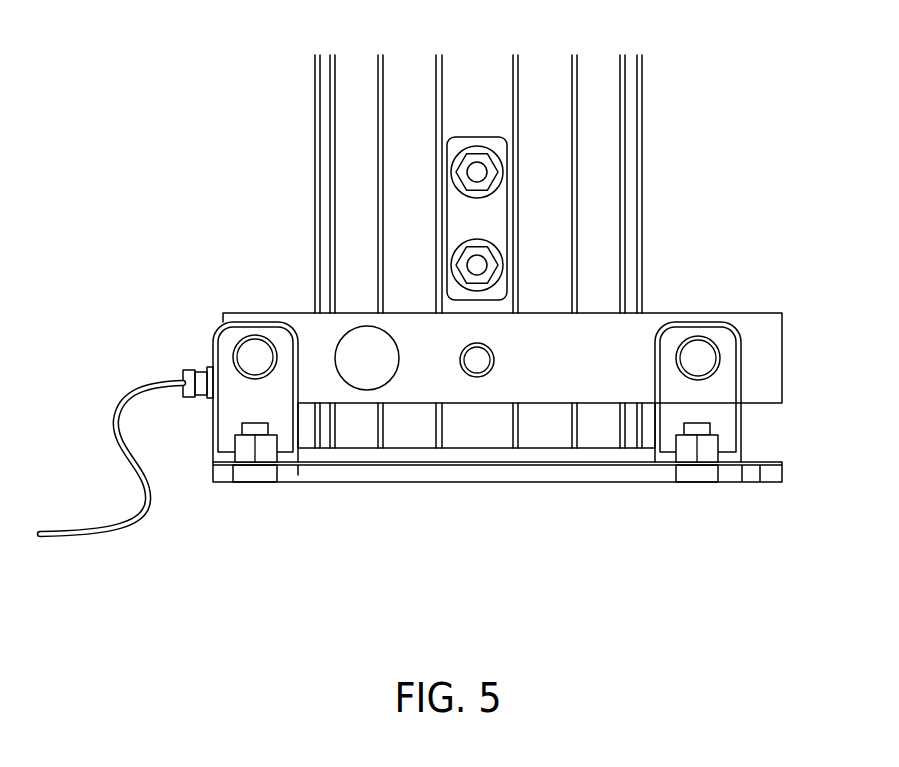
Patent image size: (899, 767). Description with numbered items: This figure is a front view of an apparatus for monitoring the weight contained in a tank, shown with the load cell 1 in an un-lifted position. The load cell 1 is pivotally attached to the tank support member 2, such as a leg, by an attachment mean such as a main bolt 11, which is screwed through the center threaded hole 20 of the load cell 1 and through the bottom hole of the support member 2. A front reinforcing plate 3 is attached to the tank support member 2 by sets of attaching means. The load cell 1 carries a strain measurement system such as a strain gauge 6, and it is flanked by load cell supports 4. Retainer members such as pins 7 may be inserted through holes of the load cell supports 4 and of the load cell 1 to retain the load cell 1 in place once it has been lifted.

The load cell 1 is at (315, 342).
The tank support member 2 is at (320, 113).
The reinforcing plate 3 is at (490, 215).
The load cell support 4 is at (235, 383).
The strain gauge 6 is at (360, 364).
The pin 7 is at (697, 360).
The main bolt 11 is at (477, 380).
The center threaded hole 20 is at (485, 356).